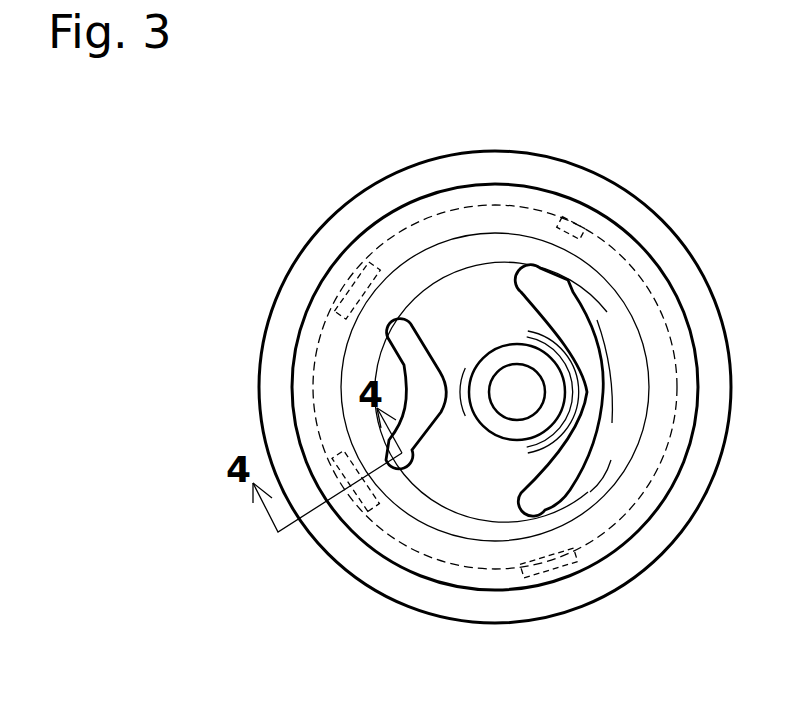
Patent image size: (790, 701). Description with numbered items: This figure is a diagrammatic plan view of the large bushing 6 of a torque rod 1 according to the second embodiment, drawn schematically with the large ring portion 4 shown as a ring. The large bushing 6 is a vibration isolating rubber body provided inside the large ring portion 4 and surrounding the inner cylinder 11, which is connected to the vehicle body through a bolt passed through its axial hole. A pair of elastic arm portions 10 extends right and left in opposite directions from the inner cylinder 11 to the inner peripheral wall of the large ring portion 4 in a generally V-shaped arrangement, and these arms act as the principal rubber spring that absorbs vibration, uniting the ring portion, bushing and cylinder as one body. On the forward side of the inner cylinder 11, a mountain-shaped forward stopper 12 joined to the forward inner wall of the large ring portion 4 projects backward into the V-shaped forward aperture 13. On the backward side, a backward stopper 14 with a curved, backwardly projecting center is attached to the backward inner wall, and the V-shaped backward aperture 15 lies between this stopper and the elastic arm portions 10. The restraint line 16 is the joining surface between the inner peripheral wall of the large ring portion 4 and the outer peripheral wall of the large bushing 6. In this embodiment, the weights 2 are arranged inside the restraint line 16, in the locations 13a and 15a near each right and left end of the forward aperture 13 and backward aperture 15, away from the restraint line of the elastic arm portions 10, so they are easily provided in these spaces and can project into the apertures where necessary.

The torque rod 1 is at (433, 178).
The weight 2 is at (570, 218).
The large ring portion 4 is at (342, 240).
The large bushing 6 is at (450, 297).
The elastic arm portion 10 is at (408, 452).
The inner cylinder 11 is at (497, 352).
The forward stopper 12 is at (403, 380).
The forward aperture 13 is at (368, 490).
The location adjacent to forward aperture 13a is at (340, 303).
The backward stopper 14 is at (597, 317).
The backward aperture 15 is at (547, 292).
The location adjacent to backward aperture 15a is at (533, 243).
The restraint line 16 is at (317, 380).